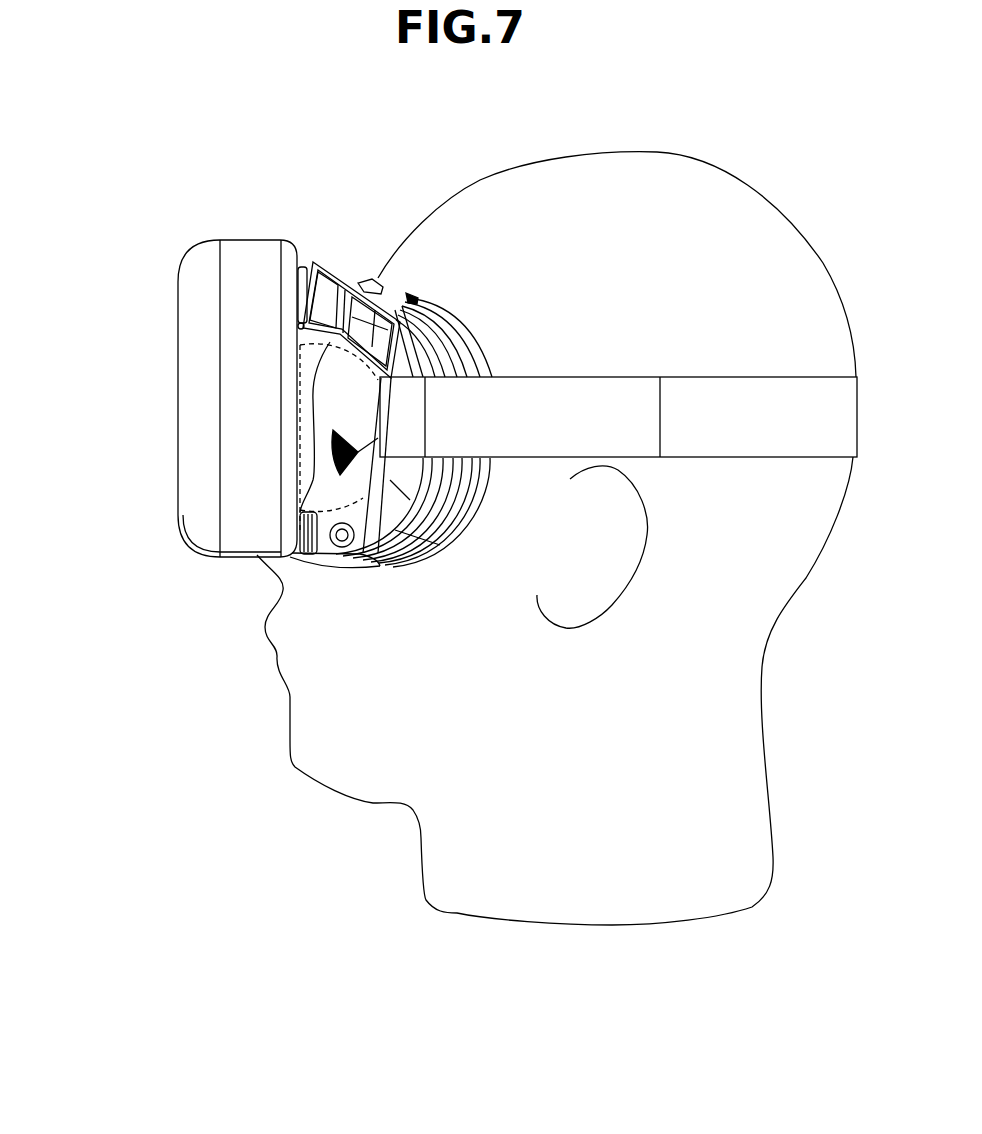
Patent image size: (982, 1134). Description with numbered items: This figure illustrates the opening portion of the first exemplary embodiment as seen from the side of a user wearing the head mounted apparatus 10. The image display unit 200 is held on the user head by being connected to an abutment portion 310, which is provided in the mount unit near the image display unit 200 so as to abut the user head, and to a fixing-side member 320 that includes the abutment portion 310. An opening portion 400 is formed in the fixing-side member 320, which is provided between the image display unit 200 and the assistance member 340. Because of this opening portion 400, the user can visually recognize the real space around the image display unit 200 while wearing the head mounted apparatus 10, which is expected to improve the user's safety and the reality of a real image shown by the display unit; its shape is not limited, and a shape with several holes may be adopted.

The head mounted apparatus 10 is at (152, 352).
The image display unit 200 is at (197, 248).
The abutment portion 310 is at (378, 277).
The fixing-side member 320 is at (413, 304).
The assistance member 340 is at (470, 350).
The opening portion 400 is at (297, 423).